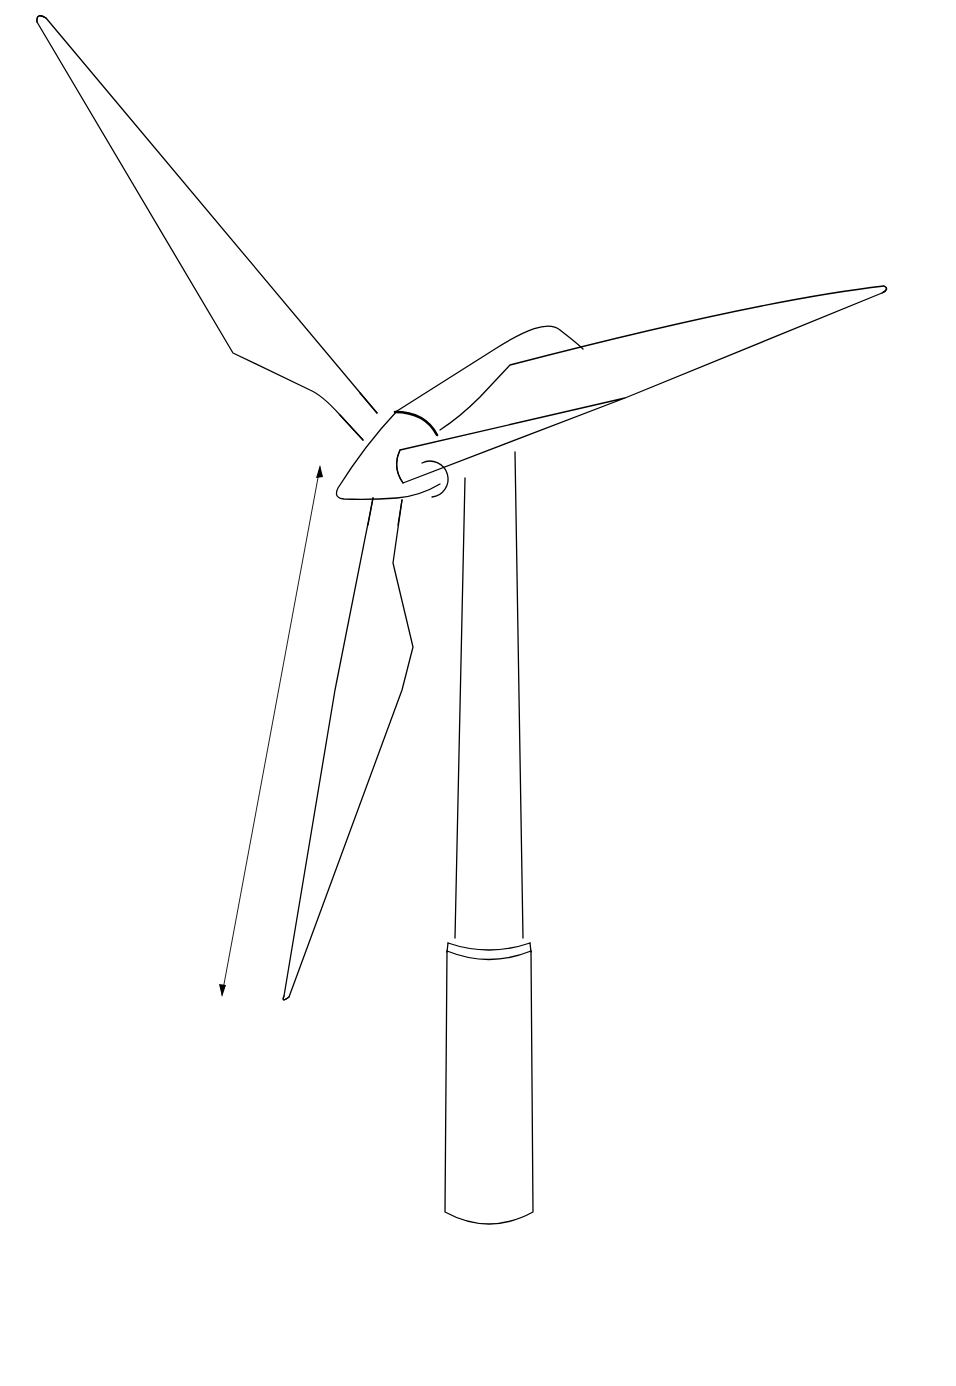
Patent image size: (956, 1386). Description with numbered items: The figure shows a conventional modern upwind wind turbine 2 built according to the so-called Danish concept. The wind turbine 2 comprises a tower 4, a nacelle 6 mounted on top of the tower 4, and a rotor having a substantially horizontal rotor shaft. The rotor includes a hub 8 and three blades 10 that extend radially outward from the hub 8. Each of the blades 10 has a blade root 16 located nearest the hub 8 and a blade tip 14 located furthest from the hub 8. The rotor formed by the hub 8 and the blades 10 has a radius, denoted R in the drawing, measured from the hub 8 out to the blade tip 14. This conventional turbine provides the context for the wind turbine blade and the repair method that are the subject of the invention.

The wind turbine 2 is at (616, 775).
The tower 4 is at (510, 695).
The nacelle 6 is at (452, 390).
The hub 8 is at (345, 468).
The blades 10 is at (243, 323).
The blade tip 14 is at (83, 77).
The blade root 16 is at (363, 433).